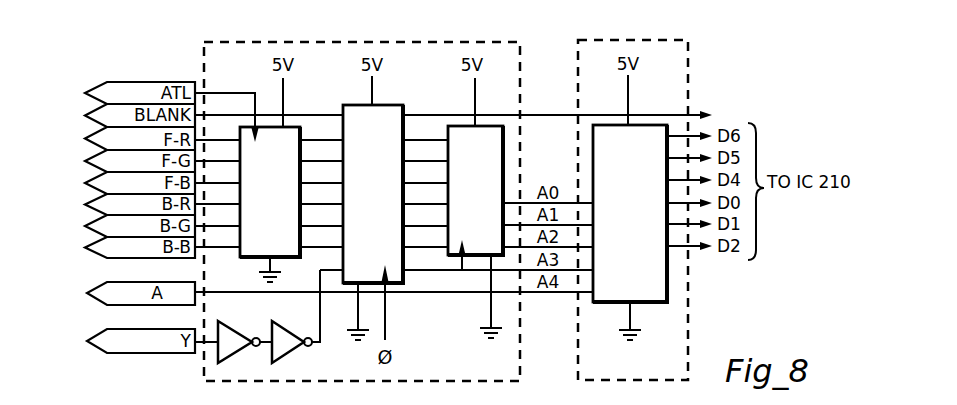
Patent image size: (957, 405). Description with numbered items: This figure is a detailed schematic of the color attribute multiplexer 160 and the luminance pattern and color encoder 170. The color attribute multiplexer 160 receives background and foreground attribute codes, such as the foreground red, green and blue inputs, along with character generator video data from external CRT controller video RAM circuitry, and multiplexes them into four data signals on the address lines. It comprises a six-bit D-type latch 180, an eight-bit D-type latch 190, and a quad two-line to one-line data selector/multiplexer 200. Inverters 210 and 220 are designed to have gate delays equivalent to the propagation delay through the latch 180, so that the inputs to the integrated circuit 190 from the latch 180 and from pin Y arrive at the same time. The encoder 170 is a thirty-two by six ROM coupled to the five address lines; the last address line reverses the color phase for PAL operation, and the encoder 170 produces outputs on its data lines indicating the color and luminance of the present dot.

The color attribute multiplexer 160 is at (467, 41).
The luminance pattern and color encoder 170 is at (631, 40).
The 6-bit D-type latch 180 is at (258, 199).
The 8-bit D-type latch 190 is at (361, 199).
The quad 2-line to 1-line data selector/multiplexer 200 is at (465, 199).
The inverter 210 is at (232, 331).
The inverter 220 is at (288, 331).